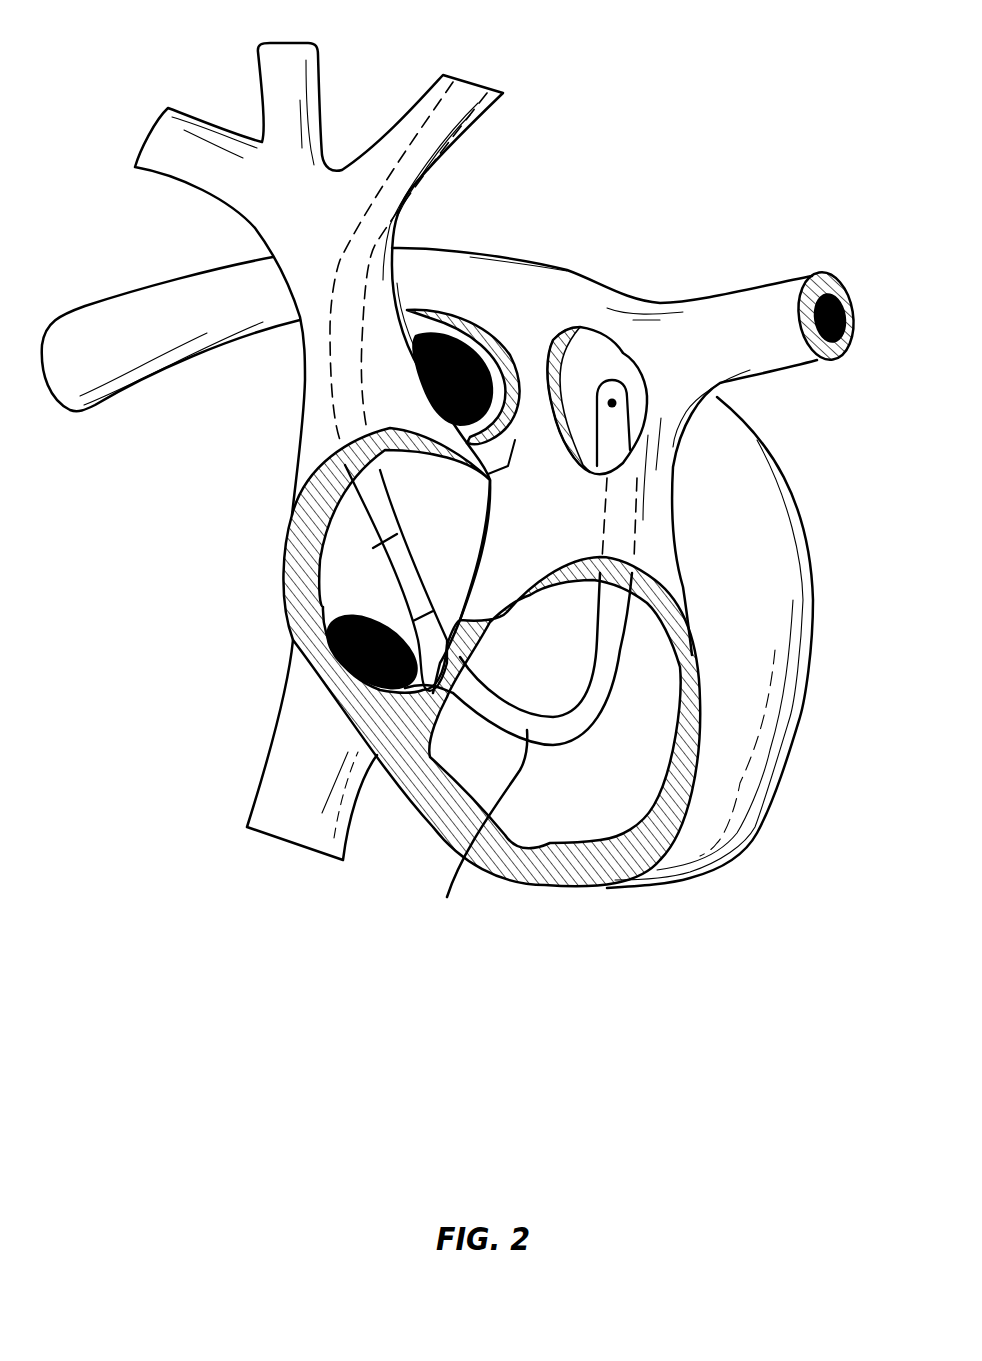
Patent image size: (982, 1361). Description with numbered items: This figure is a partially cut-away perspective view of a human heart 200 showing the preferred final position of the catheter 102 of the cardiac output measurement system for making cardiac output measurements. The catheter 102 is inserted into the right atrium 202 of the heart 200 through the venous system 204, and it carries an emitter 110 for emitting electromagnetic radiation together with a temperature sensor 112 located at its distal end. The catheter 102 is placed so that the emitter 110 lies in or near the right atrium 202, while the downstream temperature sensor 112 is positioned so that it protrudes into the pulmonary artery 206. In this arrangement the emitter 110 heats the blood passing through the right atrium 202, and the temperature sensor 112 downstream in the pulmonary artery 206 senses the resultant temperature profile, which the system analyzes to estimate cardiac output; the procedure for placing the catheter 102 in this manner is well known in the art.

The catheter 102 is at (483, 504).
The emitter 110 is at (393, 570).
The temperature sensor 112 is at (612, 400).
The human heart 200 is at (813, 563).
The right atrium 202 is at (357, 597).
The venous system 204 is at (413, 102).
The pulmonary artery 206 is at (137, 382).